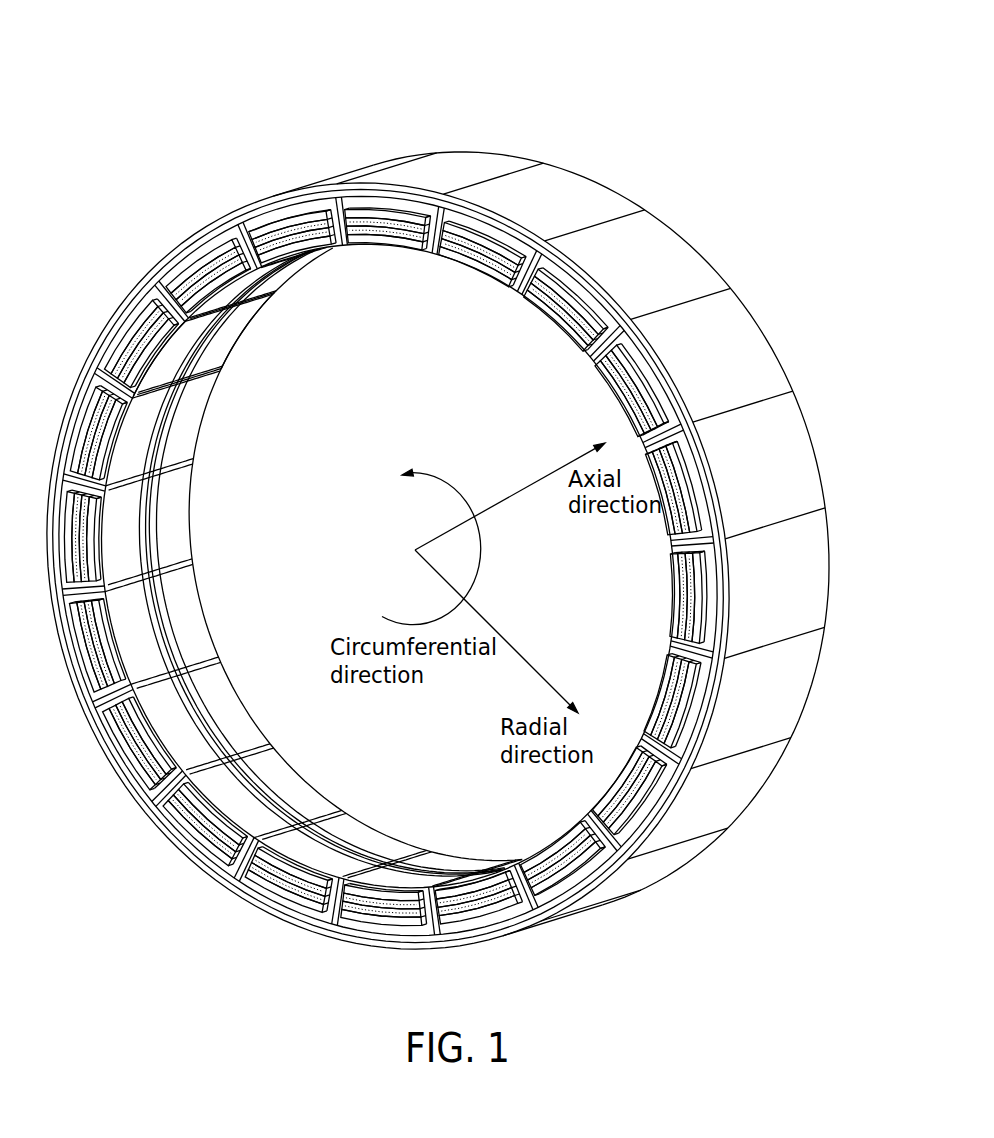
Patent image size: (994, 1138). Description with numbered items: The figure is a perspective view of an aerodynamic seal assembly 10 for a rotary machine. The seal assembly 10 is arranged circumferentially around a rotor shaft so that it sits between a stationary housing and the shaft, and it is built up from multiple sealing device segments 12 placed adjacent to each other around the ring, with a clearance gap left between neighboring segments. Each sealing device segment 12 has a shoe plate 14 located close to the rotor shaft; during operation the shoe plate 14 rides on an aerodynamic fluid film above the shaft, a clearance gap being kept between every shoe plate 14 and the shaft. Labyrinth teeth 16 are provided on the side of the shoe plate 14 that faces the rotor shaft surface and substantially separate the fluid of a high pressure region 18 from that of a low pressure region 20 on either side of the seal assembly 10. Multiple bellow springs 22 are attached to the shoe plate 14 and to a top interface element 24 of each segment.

The aerodynamic seal assembly 10 is at (433, 485).
The sealing device segment 12 is at (452, 258).
The shoe plate 14 is at (203, 400).
The labyrinth teeth 16 is at (157, 458).
The high pressure region 18 is at (103, 800).
The low pressure region 20 is at (212, 613).
The bellow springs 22 is at (127, 347).
The top interface element 24 is at (736, 338).